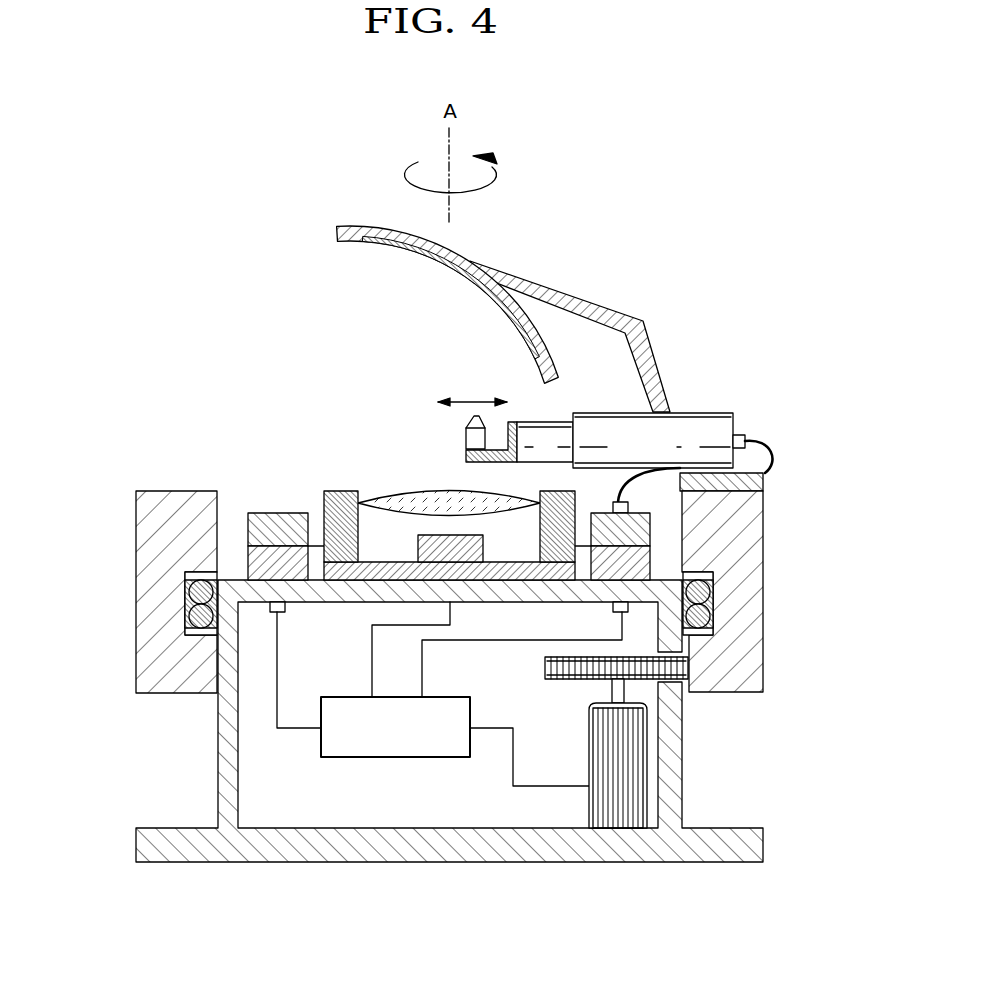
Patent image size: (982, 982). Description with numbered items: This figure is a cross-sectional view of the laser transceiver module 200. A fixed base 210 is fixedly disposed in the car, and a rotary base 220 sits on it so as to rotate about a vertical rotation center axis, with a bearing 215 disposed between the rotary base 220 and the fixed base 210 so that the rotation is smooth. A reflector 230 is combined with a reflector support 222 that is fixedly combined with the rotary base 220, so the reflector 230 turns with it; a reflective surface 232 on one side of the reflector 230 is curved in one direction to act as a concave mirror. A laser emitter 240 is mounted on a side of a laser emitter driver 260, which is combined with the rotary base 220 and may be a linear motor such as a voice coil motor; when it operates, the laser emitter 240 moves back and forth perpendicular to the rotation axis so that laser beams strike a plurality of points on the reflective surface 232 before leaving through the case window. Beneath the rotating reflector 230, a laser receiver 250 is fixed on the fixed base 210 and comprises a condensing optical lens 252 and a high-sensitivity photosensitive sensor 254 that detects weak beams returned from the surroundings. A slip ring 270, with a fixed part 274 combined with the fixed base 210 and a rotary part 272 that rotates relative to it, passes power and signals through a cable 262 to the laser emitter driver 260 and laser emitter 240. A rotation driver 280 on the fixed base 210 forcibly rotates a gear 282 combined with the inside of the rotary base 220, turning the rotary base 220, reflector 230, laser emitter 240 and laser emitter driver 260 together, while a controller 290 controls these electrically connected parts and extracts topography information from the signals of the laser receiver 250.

The laser transceiver module 200 is at (190, 228).
The fixed base 210 is at (682, 768).
The bearing 215 is at (187, 592).
The rotary base 220 is at (757, 537).
The reflector support 222 is at (575, 298).
The reflector 230 is at (357, 224).
The reflective surface 232 is at (380, 248).
The laser emitter 240 is at (470, 437).
The laser receiver 250 is at (392, 421).
The optical lens 252 is at (344, 491).
The photosensitive sensor 254 is at (445, 535).
The laser emitter driver 260 is at (706, 412).
The cable 262 is at (776, 444).
The slip ring 270 is at (72, 498).
The rotary part 272 is at (248, 530).
The fixed part 274 is at (248, 562).
The rotation driver 280 is at (618, 818).
The gear 282 is at (688, 670).
The controller 290 is at (358, 757).